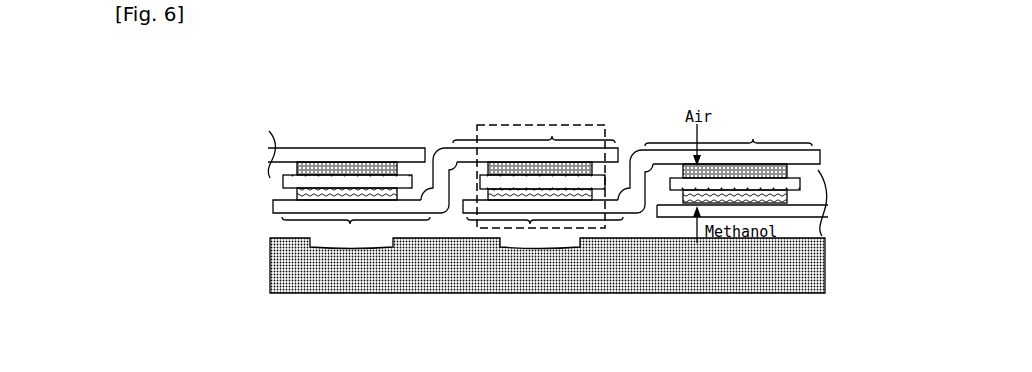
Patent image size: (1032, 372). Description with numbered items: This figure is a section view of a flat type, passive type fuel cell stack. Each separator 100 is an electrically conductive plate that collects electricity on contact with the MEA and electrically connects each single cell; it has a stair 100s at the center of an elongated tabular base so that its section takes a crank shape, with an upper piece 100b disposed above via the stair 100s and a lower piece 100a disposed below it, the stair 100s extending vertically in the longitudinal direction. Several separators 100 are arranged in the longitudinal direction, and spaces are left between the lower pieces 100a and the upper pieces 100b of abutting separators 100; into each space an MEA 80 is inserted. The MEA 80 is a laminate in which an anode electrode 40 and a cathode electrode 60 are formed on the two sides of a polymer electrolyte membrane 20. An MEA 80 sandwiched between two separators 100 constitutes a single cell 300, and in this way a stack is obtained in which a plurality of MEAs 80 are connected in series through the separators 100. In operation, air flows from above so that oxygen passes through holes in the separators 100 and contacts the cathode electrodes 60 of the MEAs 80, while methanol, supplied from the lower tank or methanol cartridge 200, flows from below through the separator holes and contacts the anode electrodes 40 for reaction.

The separator 100 is at (297, 153).
The lower piece 100a is at (550, 225).
The upper piece 100b is at (550, 137).
The stair 100s is at (442, 162).
The MEA (membrane electrode assembly) 80 is at (541, 133).
The cathode electrode 60 is at (318, 170).
The polymer electrolyte membrane 20 is at (345, 182).
The anode electrode 40 is at (378, 195).
The single cell 300 is at (588, 114).
The lower tank (methanol cartridge) 200 is at (318, 280).